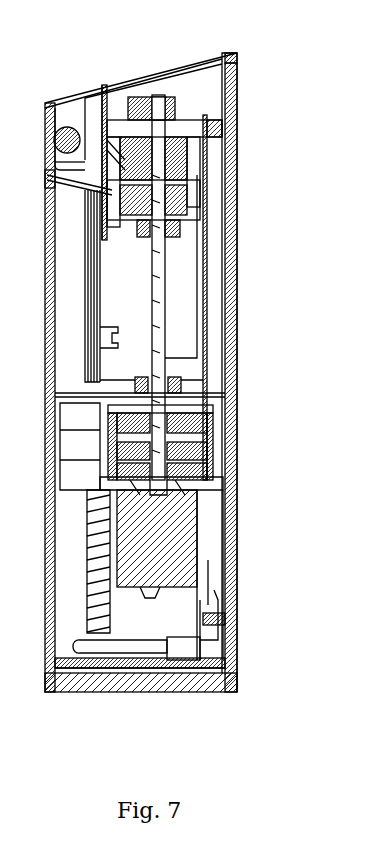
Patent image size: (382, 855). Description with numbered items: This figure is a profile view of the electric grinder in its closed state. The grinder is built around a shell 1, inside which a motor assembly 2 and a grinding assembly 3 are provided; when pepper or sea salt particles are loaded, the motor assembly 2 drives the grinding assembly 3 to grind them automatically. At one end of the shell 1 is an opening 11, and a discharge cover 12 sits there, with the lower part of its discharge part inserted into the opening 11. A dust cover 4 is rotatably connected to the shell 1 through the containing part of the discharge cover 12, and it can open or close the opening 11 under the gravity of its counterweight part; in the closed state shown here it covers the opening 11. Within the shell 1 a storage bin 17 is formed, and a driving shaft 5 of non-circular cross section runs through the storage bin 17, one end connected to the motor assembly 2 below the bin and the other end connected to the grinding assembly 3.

The shell 1 is at (150, 692).
The motor assembly 2 is at (215, 470).
The grinding assembly 3 is at (140, 100).
The dust cover 4 is at (168, 75).
The driving shaft 5 is at (165, 280).
The opening 11 is at (222, 62).
The discharge cover 12 is at (234, 108).
The storage bin 17 is at (205, 318).